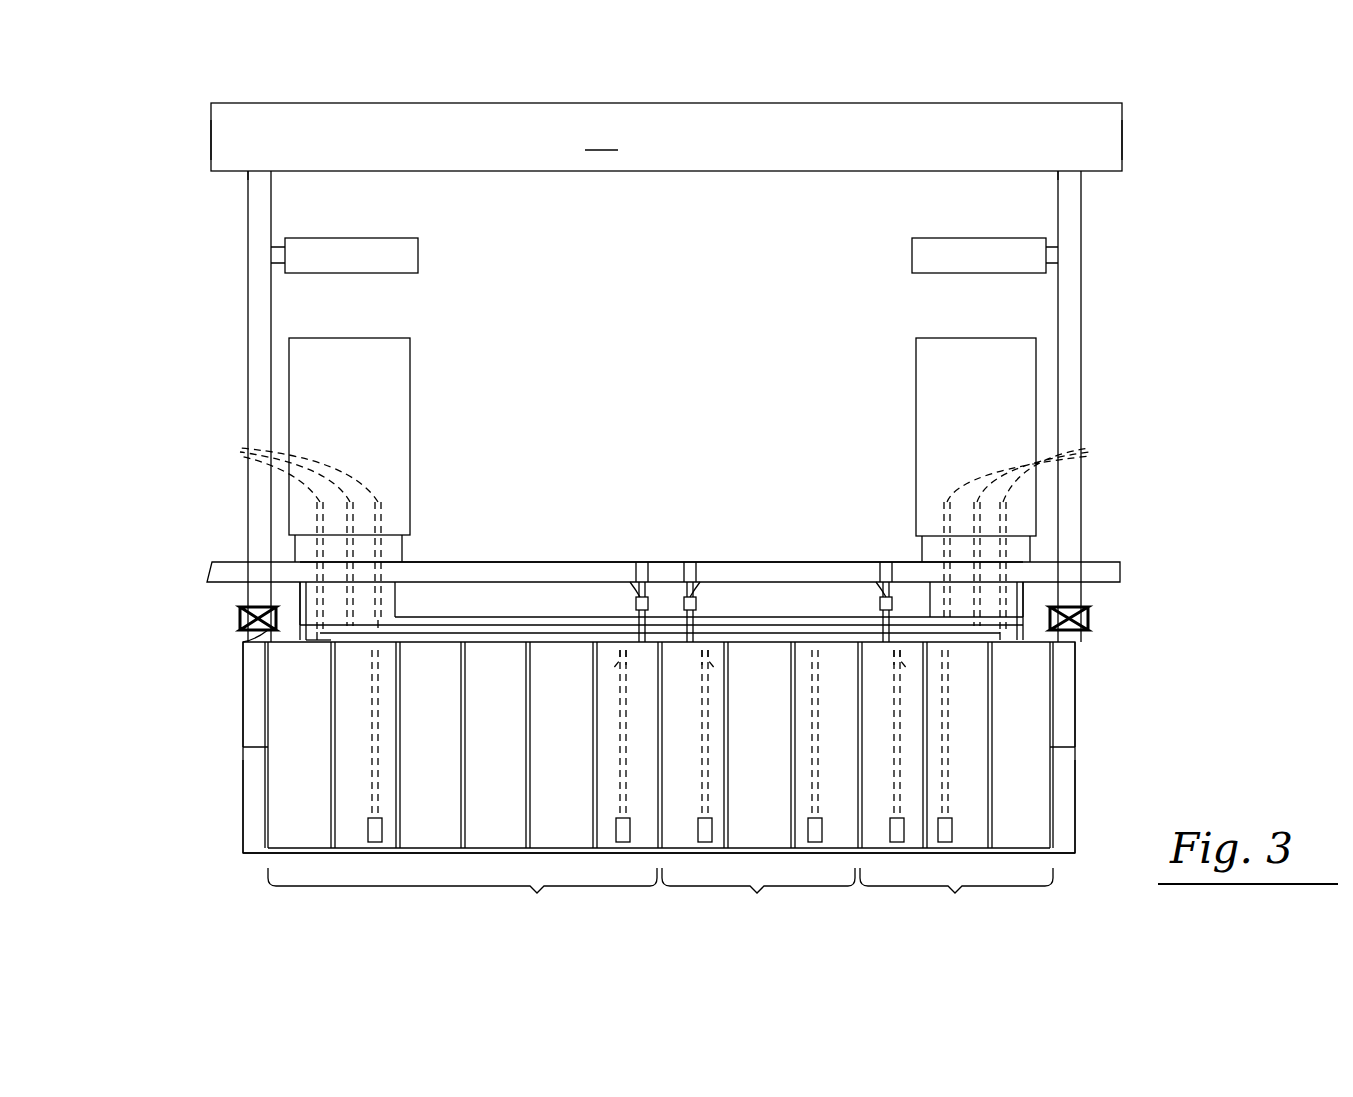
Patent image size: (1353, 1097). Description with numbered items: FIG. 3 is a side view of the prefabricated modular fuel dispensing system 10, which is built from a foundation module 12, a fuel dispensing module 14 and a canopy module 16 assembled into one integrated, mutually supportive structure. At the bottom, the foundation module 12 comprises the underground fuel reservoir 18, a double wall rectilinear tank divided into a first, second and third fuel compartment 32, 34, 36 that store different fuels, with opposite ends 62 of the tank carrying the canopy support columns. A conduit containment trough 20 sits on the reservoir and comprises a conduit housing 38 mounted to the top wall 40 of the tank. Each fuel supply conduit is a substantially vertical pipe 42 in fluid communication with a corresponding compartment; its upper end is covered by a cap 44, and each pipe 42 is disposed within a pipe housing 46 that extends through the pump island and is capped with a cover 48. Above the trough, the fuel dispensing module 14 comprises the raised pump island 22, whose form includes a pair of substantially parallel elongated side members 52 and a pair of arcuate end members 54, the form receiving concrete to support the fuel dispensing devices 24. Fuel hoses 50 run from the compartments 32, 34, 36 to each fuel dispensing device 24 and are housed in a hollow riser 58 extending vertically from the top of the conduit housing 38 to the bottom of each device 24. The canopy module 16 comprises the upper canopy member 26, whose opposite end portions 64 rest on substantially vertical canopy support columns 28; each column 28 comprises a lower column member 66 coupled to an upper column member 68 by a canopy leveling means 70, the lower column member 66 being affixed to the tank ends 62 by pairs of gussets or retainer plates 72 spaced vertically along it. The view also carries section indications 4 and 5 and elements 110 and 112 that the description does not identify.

The prefabricated modular fuel dispensing system 10 is at (1214, 353).
The foundation module 12 is at (300, 896).
The fuel dispensing module 14 is at (670, 466).
The canopy module 16 is at (1150, 130).
The underground fuel reservoir 18 is at (700, 872).
The conduit containment trough 20 is at (517, 585).
The raised pump island 22 is at (530, 462).
The fuel dispensing device 24 is at (410, 362).
The upper canopy member 26 is at (601, 136).
The substantially vertical canopy support column 28 is at (216, 495).
The first fuel compartment 32 is at (462, 784).
The second fuel compartment 34 is at (756, 785).
The third fuel compartment 36 is at (955, 785).
The conduit housing 38 is at (265, 642).
The top wall 40 is at (325, 650).
The substantially vertical pipe 42 is at (615, 670).
The cap 44 is at (636, 585).
The pipe housing 46 is at (636, 598).
The cover 48 is at (645, 575).
The fuel hose 50 is at (232, 460).
The elongated side member 52 is at (482, 562).
The arcuate end member 54 is at (213, 566).
The hollow riser 58 is at (300, 590).
The opposite end 62 is at (260, 798).
The opposite end portion 64 is at (228, 132).
The lower column member 66 is at (258, 710).
The upper column member 68 is at (252, 374).
The canopy leveling means 70 is at (217, 621).
The gusset or retainer plate 72 is at (268, 630).
The probe 110 is at (382, 820).
The actuator 112 is at (408, 250).
The section line 4 is at (480, 500).
The section line 5 is at (460, 575).